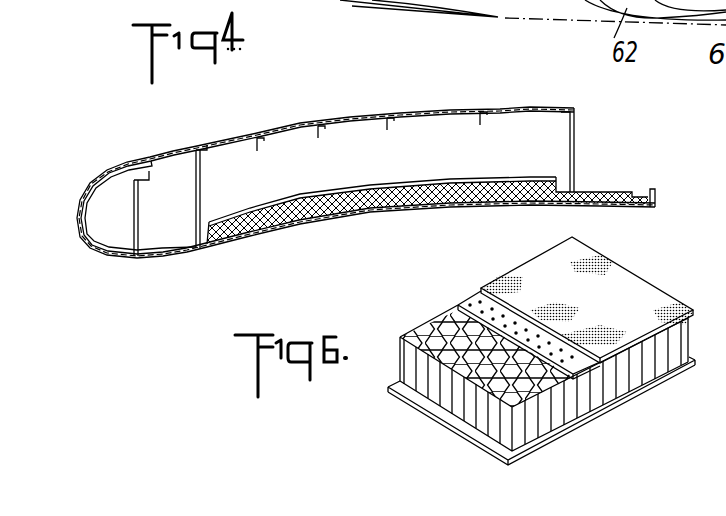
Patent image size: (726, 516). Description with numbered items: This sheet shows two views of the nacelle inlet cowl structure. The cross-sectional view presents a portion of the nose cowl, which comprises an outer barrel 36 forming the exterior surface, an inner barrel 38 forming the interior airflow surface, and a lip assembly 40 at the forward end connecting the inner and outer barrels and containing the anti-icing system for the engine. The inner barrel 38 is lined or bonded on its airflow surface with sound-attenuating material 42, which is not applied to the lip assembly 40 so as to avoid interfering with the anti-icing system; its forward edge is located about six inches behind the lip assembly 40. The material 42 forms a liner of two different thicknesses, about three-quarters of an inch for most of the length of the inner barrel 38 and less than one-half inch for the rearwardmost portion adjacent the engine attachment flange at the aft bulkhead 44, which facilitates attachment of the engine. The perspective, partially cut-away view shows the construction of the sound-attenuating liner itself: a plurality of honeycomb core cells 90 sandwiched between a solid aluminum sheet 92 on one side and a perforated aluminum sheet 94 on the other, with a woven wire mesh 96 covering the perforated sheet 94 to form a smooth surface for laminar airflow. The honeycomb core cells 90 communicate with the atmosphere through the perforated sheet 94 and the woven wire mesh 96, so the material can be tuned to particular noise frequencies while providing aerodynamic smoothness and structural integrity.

In FIG. 4, the outer barrel 36 is at (240, 136).
In FIG. 4, the inner barrel 38 is at (209, 247).
In FIG. 4, the lip assembly 40 is at (118, 258).
In FIG. 4, the sound-attenuating material 42 is at (368, 202).
In FIG. 4, the aft bulkhead 44 is at (576, 150).
In FIG. 6, the honeycomb core cells 90 is at (443, 403).
In FIG. 6, the solid aluminum sheet 92 is at (576, 430).
In FIG. 6, the perforated aluminum sheet 94 is at (468, 298).
In FIG. 6, the woven wire mesh 96 is at (633, 296).